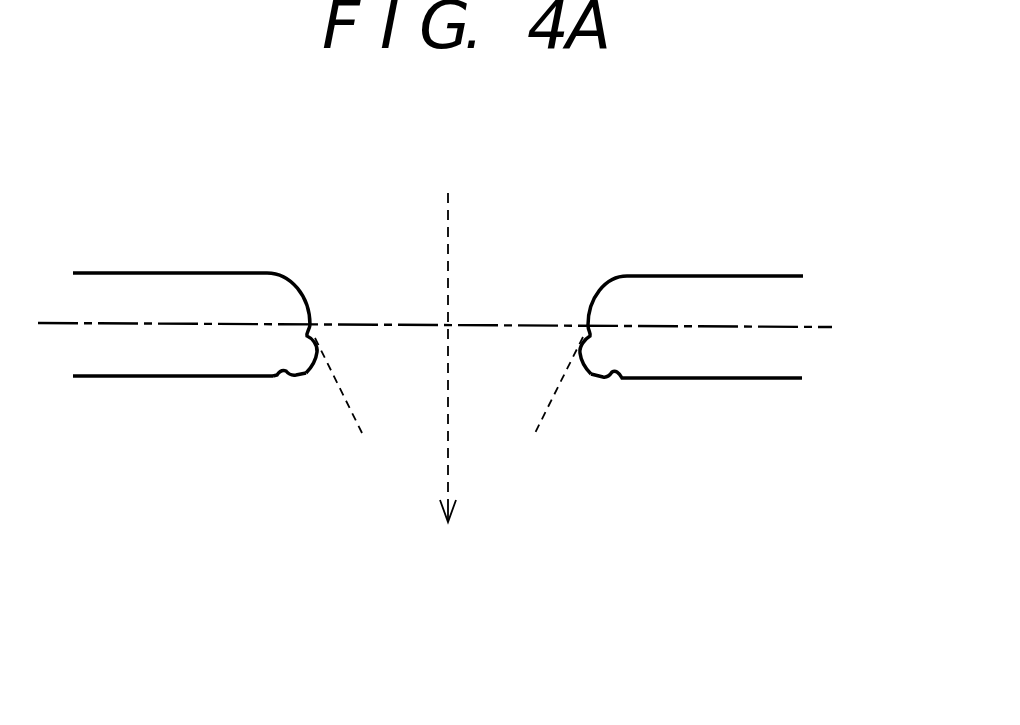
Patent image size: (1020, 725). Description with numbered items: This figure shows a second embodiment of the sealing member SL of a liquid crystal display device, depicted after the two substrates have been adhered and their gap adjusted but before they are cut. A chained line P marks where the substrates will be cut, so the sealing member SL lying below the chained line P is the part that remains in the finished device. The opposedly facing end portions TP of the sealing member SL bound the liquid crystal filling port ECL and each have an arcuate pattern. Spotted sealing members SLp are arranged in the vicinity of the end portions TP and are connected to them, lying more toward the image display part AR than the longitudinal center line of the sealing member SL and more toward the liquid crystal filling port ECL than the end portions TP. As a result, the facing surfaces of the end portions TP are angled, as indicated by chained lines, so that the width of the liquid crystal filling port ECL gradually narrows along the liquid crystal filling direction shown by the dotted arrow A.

The chained line P is at (145, 323).
The sealing member SL is at (134, 362).
The end portion TP is at (310, 322).
The spotted sealing member SLp is at (305, 360).
The image display part AR is at (695, 396).
The liquid crystal filling port ECL is at (423, 302).
The dotted arrow A is at (449, 536).